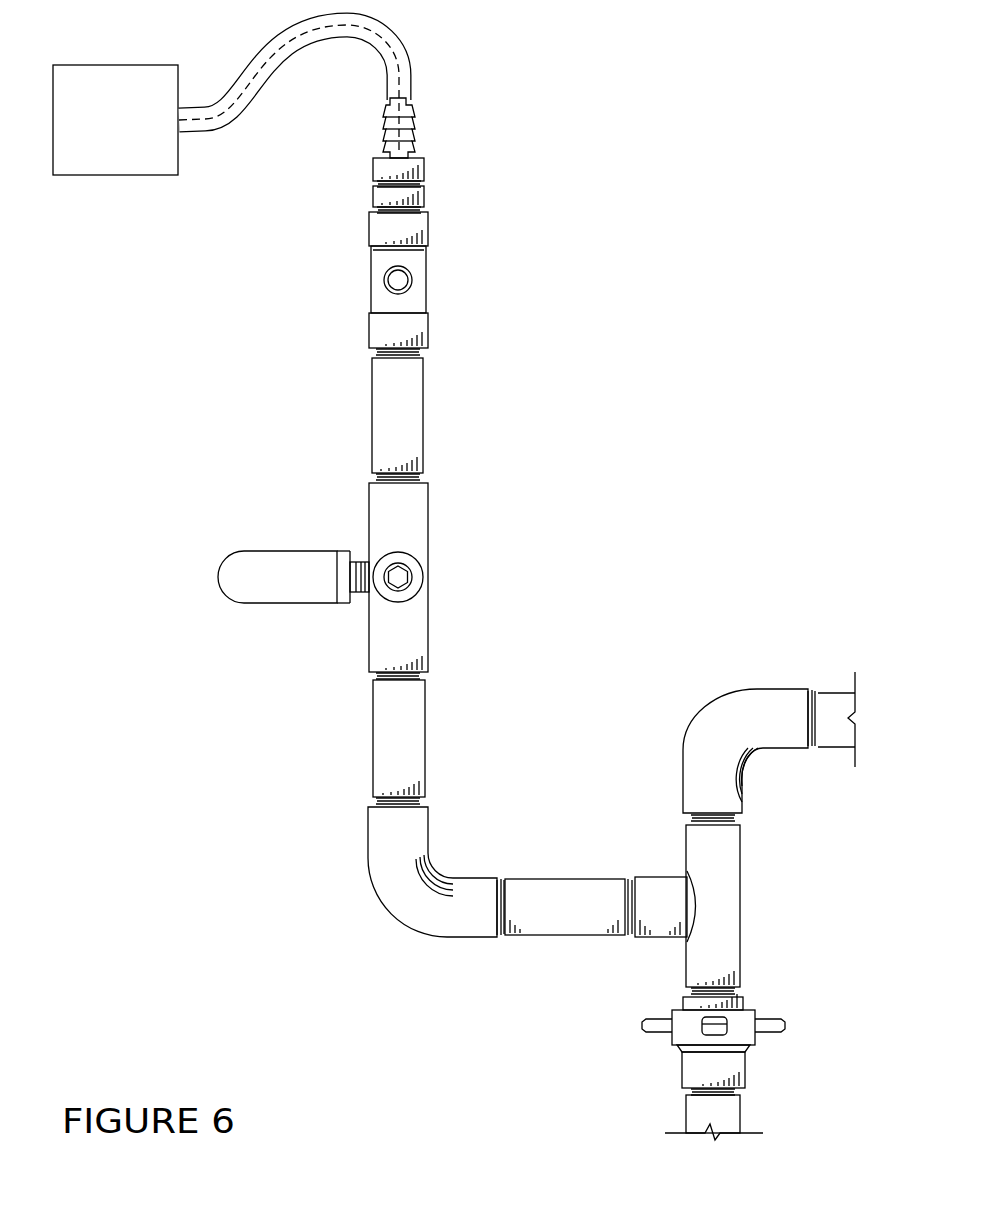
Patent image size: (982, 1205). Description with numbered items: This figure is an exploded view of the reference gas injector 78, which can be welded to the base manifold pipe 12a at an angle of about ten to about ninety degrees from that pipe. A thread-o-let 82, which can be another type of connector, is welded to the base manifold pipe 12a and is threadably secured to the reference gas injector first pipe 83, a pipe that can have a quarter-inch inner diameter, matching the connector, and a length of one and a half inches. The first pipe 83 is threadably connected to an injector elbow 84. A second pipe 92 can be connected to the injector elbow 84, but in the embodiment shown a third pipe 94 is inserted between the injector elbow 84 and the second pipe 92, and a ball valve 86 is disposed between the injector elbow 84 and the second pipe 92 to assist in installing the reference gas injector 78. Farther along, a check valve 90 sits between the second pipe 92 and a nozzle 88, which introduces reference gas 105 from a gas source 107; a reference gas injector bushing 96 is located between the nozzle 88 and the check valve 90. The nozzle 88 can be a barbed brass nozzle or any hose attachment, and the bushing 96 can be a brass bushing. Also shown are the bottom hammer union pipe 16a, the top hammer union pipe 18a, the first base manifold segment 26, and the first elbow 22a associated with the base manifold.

The reference gas injector 78 is at (541, 89).
The reference gas 105 is at (348, 22).
The gas source 107 is at (116, 177).
The nozzle 88 is at (383, 166).
The reference gas injector bushing 96 is at (383, 192).
The check valve 90 is at (378, 281).
The second pipe 92 is at (383, 416).
The ball valve 86 is at (413, 523).
The third pipe 94 is at (383, 738).
The injector elbow 84 is at (393, 897).
The reference gas injector first pipe 83 is at (568, 890).
The thread-o-let 82 is at (663, 888).
The base manifold pipe 12a is at (735, 871).
The first elbow 22a is at (707, 740).
The first base manifold segment 26 is at (835, 705).
The top hammer union pipe 18a is at (755, 1037).
The bottom hammer union pipe 16a is at (688, 1070).